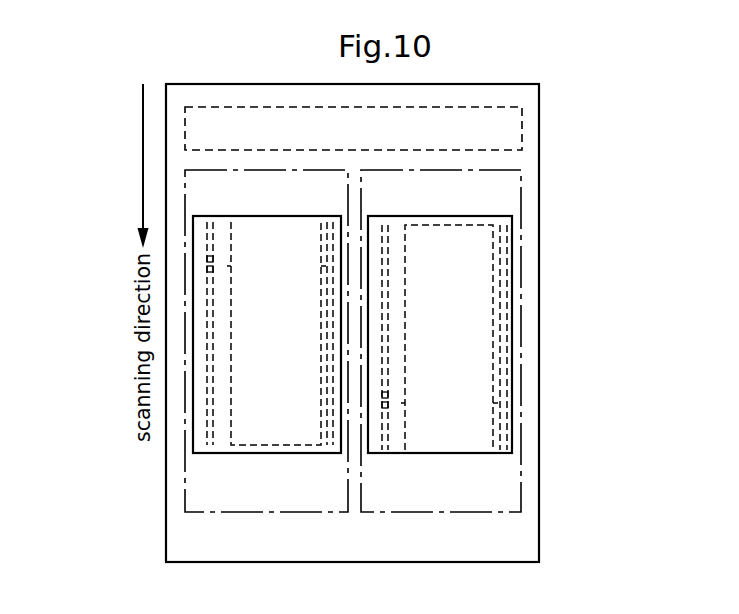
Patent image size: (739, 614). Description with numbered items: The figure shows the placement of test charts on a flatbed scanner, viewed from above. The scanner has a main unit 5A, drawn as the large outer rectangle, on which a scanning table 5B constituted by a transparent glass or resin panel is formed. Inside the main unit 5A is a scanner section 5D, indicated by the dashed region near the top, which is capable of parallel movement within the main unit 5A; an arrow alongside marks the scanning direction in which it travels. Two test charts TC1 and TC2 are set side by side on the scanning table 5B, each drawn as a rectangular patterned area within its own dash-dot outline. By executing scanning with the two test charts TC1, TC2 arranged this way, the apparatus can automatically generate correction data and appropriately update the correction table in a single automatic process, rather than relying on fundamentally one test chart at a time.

The main unit 5A is at (540, 462).
The scanning table 5B is at (505, 534).
The scanner section 5D is at (522, 128).
The test chart TC1 is at (193, 439).
The test chart TC2 is at (512, 358).